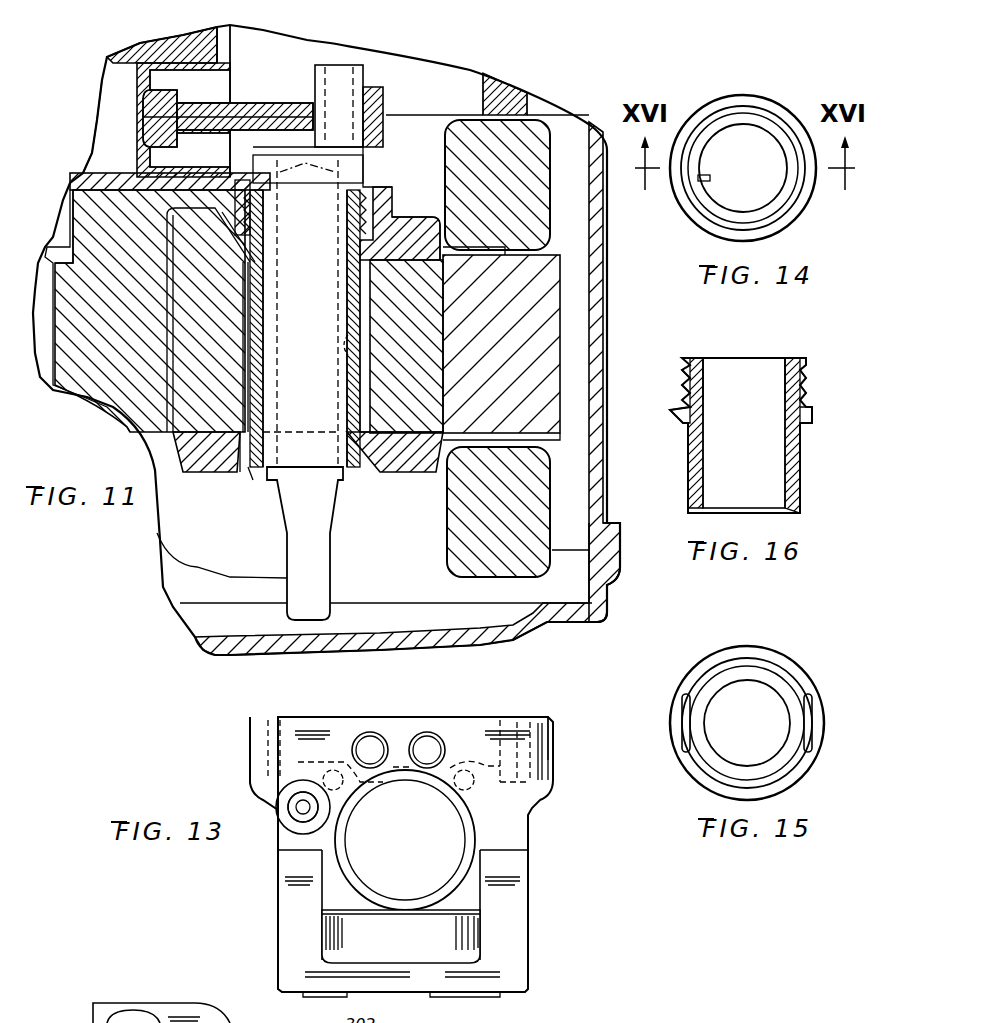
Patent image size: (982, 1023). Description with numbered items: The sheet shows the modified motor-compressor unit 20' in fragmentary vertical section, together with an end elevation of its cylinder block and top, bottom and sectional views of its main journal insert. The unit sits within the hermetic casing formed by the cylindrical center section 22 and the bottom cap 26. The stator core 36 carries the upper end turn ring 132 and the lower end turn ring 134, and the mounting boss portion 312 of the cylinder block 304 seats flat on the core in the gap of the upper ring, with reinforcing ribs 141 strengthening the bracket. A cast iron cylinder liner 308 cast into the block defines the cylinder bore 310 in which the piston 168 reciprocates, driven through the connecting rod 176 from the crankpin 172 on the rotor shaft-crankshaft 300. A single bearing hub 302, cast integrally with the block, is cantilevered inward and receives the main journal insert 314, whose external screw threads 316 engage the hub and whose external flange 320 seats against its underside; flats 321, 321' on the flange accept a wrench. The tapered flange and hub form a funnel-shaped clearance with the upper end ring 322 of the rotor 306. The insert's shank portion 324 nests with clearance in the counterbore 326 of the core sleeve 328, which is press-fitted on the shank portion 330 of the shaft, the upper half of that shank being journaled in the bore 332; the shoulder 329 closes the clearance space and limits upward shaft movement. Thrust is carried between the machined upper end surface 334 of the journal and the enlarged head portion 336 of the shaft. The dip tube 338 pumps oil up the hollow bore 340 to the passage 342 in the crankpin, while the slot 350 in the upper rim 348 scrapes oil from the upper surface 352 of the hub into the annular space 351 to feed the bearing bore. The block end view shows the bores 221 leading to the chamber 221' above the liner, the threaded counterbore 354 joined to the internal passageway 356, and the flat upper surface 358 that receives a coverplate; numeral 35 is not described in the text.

In FIG. 11, the modified motor-compressor unit 20' is at (347, 340).
In FIG. 11, the cylindrical center section 22 is at (608, 354).
In FIG. 11, the bottom cap 26 is at (613, 590).
In FIG. 11, the core 36 is at (553, 265).
In FIG. 11, the upper end turn ring 132 is at (540, 155).
In FIG. 11, the lower end turn ring 134 is at (540, 482).
In FIG. 11, the reinforcing ribs 141 is at (104, 248).
In FIG. 11, the piston 168 is at (222, 80).
In FIG. 11, the crankpin 172 is at (364, 71).
In FIG. 11, the connecting rod 176 is at (236, 102).
In FIG. 11, the rotor shaft-crankshaft 300 is at (350, 475).
In FIG. 11, the bearing hub 302 is at (393, 185).
In FIG. 13, the bearing hub 302 is at (480, 932).
In FIG. 11, the cylinder block 304 is at (125, 298).
In FIG. 13, the cylinder block 304 is at (558, 731).
In FIG. 11, the rotor 306 is at (203, 475).
In FIG. 11, the cylinder liner 308 is at (230, 46).
In FIG. 13, the cylinder liner 308 is at (466, 832).
In FIG. 11, the cylinder bore 310 is at (97, 153).
In FIG. 13, the cylinder bore 310 is at (418, 862).
In FIG. 11, the mounting boss portion 312 is at (70, 217).
In FIG. 13, the mounting boss portion 312 is at (280, 957).
In FIG. 14, the main journal insert 314 is at (806, 205).
In FIG. 16, the main journal insert 314 is at (806, 467).
In FIG. 15, the main journal insert 314 is at (805, 664).
In FIG. 16, the external screw threads 316 is at (806, 375).
In FIG. 16, the external flange 320 is at (815, 415).
In FIG. 16, the flat 321 is at (663, 432).
In FIG. 15, the flat 321 is at (654, 725).
In FIG. 16, the flat 321' is at (838, 434).
In FIG. 15, the flat 321' is at (840, 723).
In FIG. 11, the upper end ring 322 is at (398, 215).
In FIG. 11, the shank portion 324 is at (262, 276).
In FIG. 16, the shank portion 324 is at (800, 497).
In FIG. 11, the counterbore 326 is at (257, 293).
In FIG. 11, the core sleeve 328 is at (253, 440).
In FIG. 11, the shoulder 329 is at (257, 350).
In FIG. 11, the shank portion 330 is at (333, 393).
In FIG. 16, the bore 332 is at (705, 378).
In FIG. 16, the upper end surface 334 is at (790, 358).
In FIG. 11, the head portion 336 is at (382, 147).
In FIG. 11, the dip tube 338 is at (327, 550).
In FIG. 11, the hollow bore 340 is at (368, 353).
In FIG. 11, the passage 342 is at (340, 72).
In FIG. 16, the upper rim 348 is at (683, 362).
In FIG. 14, the slot 350 is at (708, 177).
In FIG. 11, the annular space 351 is at (308, 190).
In FIG. 11, the upper surface 352 is at (245, 185).
In FIG. 13, the threaded counterbore 354 is at (300, 813).
In FIG. 13, the internal passageway 356 is at (303, 807).
In FIG. 13, the flat upper surface 358 is at (520, 716).
In FIG. 13, the lug 35 is at (278, 812).
In FIG. 13, the bores 221 is at (417, 724).
In FIG. 13, the chamber 221' is at (349, 725).